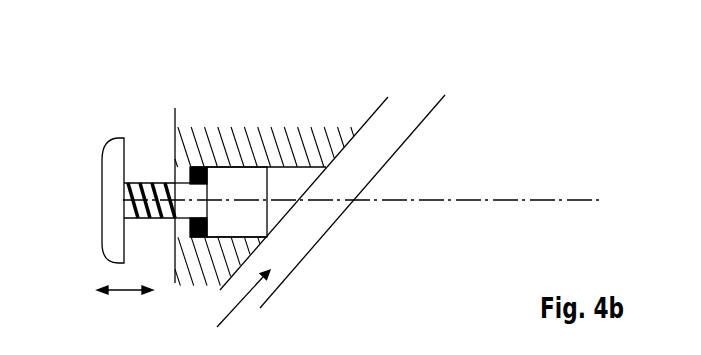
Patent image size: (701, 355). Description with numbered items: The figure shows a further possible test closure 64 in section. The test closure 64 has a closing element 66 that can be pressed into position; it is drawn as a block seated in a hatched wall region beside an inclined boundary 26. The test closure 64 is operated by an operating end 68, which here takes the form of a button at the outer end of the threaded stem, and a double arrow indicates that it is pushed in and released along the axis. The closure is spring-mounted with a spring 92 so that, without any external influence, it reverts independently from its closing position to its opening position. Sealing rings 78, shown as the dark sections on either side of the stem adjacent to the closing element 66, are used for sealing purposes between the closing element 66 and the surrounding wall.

The housing wall 26 is at (373, 127).
The test closure 64 is at (114, 102).
The closing element 66 is at (230, 177).
The operating end 68 is at (110, 182).
The sealing ring 78 is at (200, 168).
The spring 92 is at (149, 178).